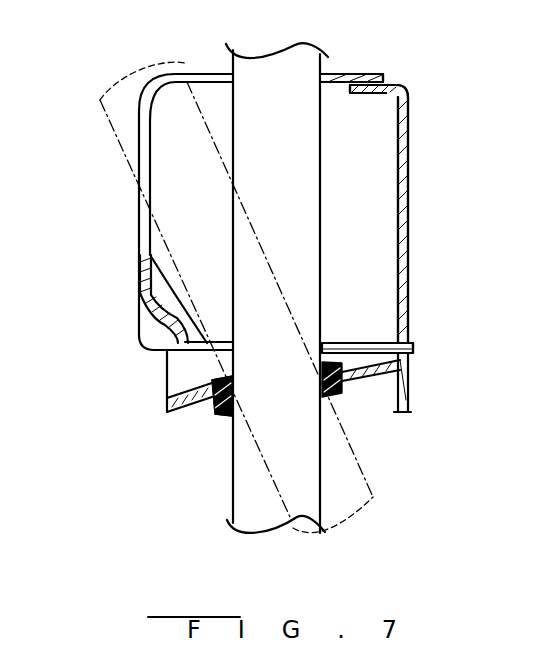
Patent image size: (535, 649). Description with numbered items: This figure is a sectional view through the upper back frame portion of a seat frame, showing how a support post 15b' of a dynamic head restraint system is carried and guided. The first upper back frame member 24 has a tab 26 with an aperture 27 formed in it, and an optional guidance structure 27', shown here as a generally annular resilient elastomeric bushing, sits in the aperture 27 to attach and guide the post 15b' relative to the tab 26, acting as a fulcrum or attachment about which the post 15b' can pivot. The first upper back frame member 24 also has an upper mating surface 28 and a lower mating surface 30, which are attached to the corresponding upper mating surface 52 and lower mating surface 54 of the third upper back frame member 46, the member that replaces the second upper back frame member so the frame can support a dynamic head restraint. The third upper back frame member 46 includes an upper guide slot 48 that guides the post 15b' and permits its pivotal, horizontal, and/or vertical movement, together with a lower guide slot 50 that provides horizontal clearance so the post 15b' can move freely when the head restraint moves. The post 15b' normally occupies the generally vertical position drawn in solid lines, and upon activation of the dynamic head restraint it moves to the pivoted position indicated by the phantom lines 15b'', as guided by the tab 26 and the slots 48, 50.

The support post 15b' is at (273, 212).
The phantom lines 15b'' is at (102, 141).
The first upper back frame member 24 is at (405, 392).
The tab 26 is at (185, 405).
The aperture 27 is at (265, 409).
The guidance structure 27' is at (172, 392).
The upper mating surface 28 is at (403, 87).
The lower mating surface 30 is at (400, 362).
The third upper back frame member 46 is at (370, 72).
The upper guide slot 48 is at (196, 78).
The lower guide slot 50 is at (352, 343).
The upper mating surface 52 is at (383, 83).
The lower mating surface 54 is at (383, 343).